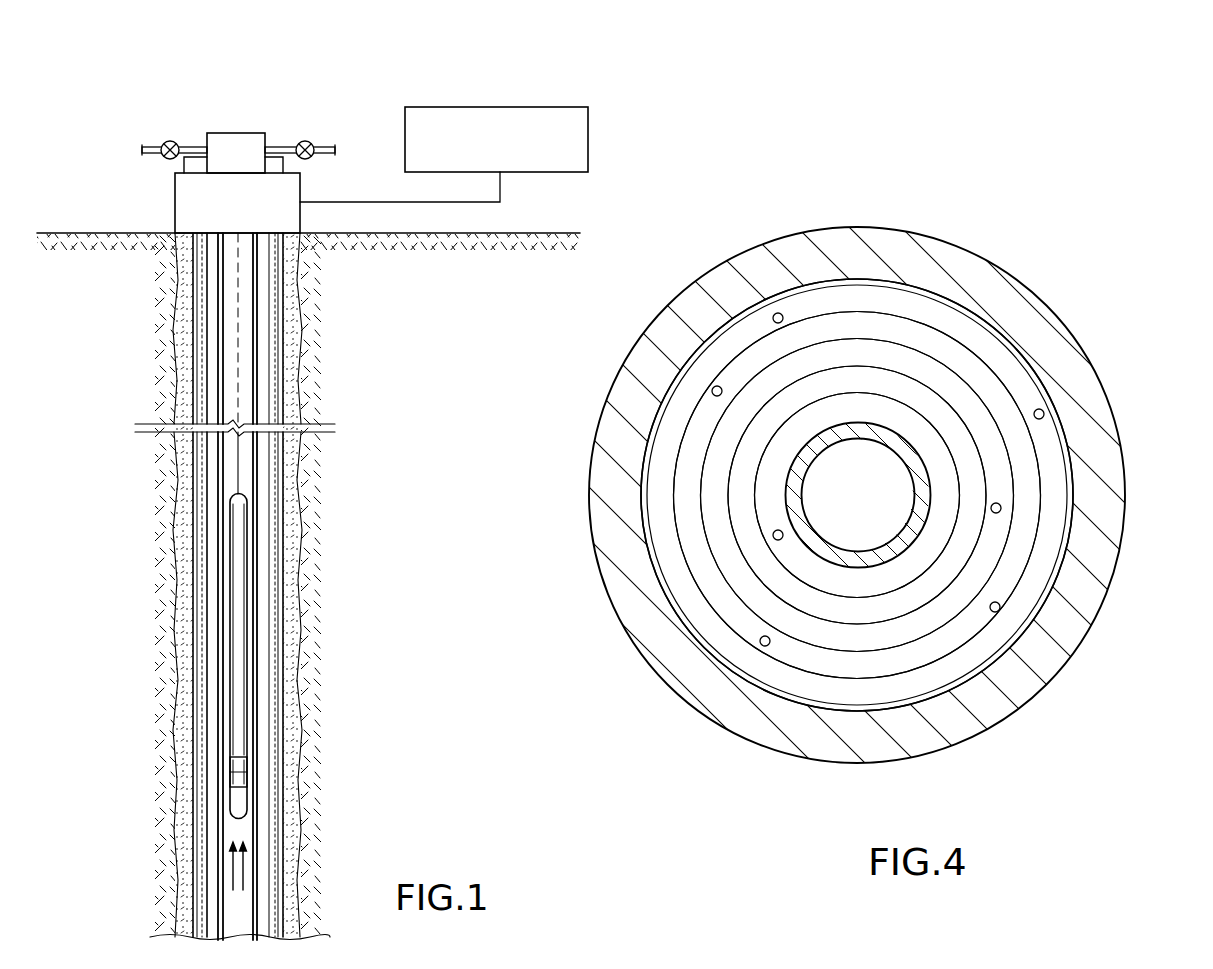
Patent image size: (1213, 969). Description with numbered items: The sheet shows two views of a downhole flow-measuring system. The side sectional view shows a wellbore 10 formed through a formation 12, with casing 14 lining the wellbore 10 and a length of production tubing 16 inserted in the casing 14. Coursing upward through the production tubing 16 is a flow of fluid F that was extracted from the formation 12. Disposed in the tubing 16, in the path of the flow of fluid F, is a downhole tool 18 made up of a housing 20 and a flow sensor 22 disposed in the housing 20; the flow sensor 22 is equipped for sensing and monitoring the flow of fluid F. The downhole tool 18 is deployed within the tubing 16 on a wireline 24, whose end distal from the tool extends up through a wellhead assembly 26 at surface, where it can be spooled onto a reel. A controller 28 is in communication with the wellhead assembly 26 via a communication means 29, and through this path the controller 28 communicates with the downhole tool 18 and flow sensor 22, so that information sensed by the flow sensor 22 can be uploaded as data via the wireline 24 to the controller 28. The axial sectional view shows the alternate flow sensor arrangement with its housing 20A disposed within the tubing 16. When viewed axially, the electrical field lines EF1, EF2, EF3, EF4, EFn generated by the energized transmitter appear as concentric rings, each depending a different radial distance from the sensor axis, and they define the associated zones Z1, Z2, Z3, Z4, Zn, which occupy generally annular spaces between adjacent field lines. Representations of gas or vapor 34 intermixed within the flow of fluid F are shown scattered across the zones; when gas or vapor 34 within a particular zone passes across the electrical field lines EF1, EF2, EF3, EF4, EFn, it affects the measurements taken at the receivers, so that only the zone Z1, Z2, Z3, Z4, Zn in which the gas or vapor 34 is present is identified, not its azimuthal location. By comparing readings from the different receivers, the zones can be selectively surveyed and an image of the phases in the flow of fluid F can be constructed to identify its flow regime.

In FIG. 1, the wellbore 10 is at (213, 727).
In FIG. 1, the formation 12 is at (170, 605).
In FIG. 1, the casing 14 is at (178, 503).
In FIG. 1, the production tubing 16 is at (255, 679).
In FIG. 4, the production tubing 16 is at (1078, 664).
In FIG. 1, the downhole tool 18 is at (255, 548).
In FIG. 1, the housing 20 is at (244, 627).
In FIG. 4, the housing 20A is at (815, 545).
In FIG. 1, the flow sensor 22 is at (244, 767).
In FIG. 1, the wireline 24 is at (239, 467).
In FIG. 1, the wellhead assembly 26 is at (175, 194).
In FIG. 1, the controller 28 is at (588, 139).
In FIG. 1, the communication means 29 is at (370, 202).
In FIG. 4, the gas or vapor 34 is at (785, 312).
In FIG. 1, the flow of fluid F is at (257, 870).
In FIG. 4, the zone Z1 is at (883, 408).
In FIG. 4, the zone Z2 is at (942, 412).
In FIG. 4, the zone Z3 is at (988, 433).
In FIG. 4, the zone Z4 is at (1030, 468).
In FIG. 4, the zone Zn is at (1055, 512).
In FIG. 4, the electrical field line EF1 is at (817, 590).
In FIG. 4, the electrical field line EF2 is at (756, 581).
In FIG. 4, the electrical field line EF3 is at (710, 547).
In FIG. 4, the electrical field line EF4 is at (673, 505).
In FIG. 4, the electrical field line EFn is at (643, 458).